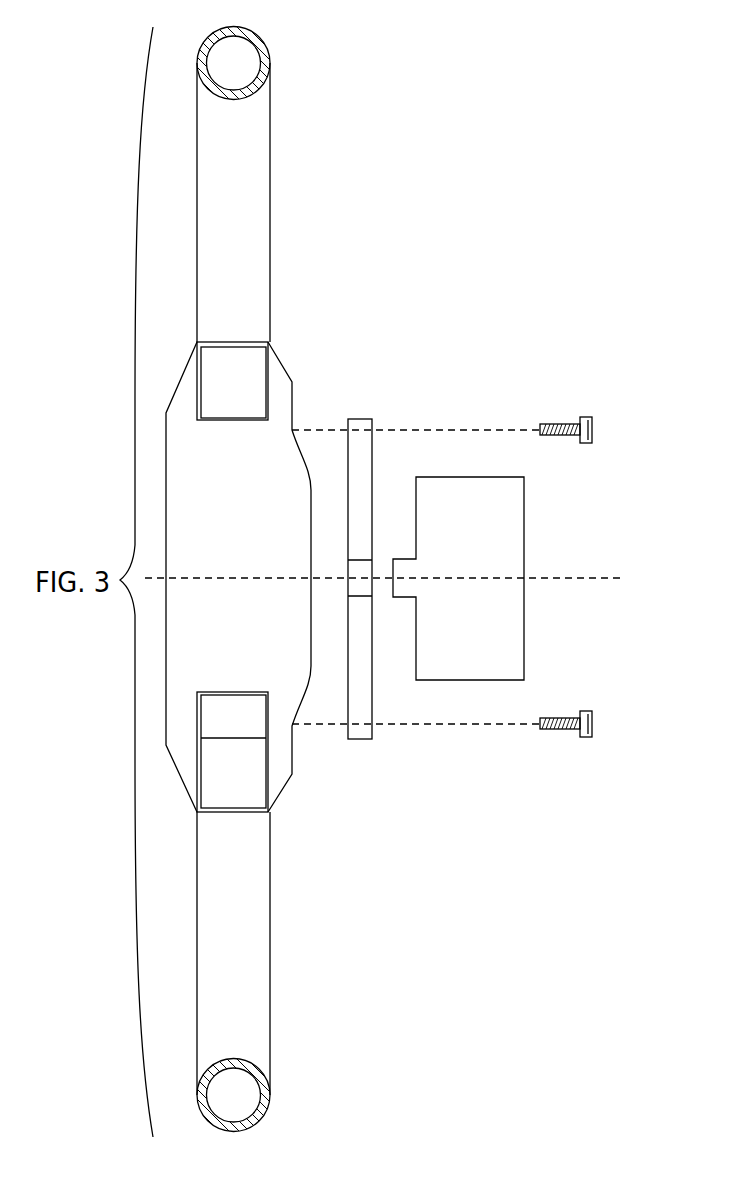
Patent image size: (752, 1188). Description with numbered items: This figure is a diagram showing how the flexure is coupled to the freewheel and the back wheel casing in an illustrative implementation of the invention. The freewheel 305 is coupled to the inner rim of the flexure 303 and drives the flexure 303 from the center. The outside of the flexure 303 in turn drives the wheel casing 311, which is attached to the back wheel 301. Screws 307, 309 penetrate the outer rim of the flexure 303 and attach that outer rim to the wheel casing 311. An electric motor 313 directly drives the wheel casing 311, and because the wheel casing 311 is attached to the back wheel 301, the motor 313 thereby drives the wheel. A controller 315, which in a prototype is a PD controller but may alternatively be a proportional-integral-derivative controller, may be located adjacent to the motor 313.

The back wheel 301 is at (279, 61).
The flexure 303 is at (360, 425).
The freewheel 305 is at (516, 520).
The screw 307 is at (592, 429).
The screw 309 is at (592, 723).
The wheel casing 311 is at (257, 506).
The electric motor 313 is at (256, 362).
The controller 315 is at (257, 722).